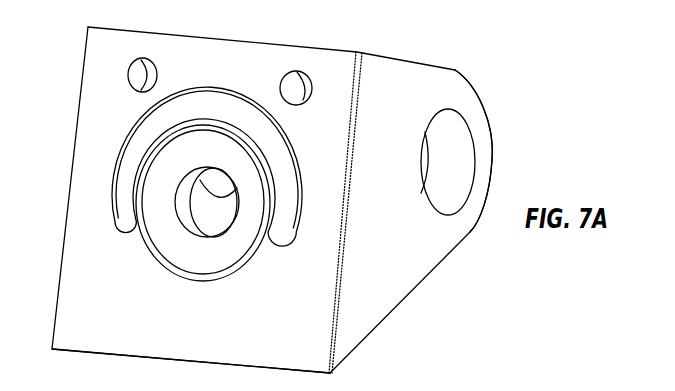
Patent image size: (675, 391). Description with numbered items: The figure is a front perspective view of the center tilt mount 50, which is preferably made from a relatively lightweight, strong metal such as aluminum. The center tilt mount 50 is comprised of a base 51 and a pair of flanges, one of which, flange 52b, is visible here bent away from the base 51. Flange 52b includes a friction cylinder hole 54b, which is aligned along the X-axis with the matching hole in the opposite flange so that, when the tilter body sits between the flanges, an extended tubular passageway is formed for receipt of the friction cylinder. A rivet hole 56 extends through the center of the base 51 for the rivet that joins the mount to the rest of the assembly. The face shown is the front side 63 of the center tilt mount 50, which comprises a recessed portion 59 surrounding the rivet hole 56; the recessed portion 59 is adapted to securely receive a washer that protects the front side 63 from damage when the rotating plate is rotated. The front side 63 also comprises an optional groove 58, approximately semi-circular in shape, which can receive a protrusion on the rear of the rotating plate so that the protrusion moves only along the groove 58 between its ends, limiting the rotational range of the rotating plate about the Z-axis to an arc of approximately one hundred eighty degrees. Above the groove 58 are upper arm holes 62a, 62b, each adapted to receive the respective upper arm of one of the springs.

The center tilt mount 50 is at (104, 39).
The base 51 is at (118, 345).
The flange 52b is at (425, 87).
The friction cylinder hole 54b is at (453, 153).
The rivet hole 56 is at (186, 213).
The groove 58 is at (118, 178).
The recessed portion 59 is at (146, 238).
The upper arm hole 62a is at (126, 76).
The upper arm hole 62b is at (306, 93).
The front side 63 is at (246, 287).